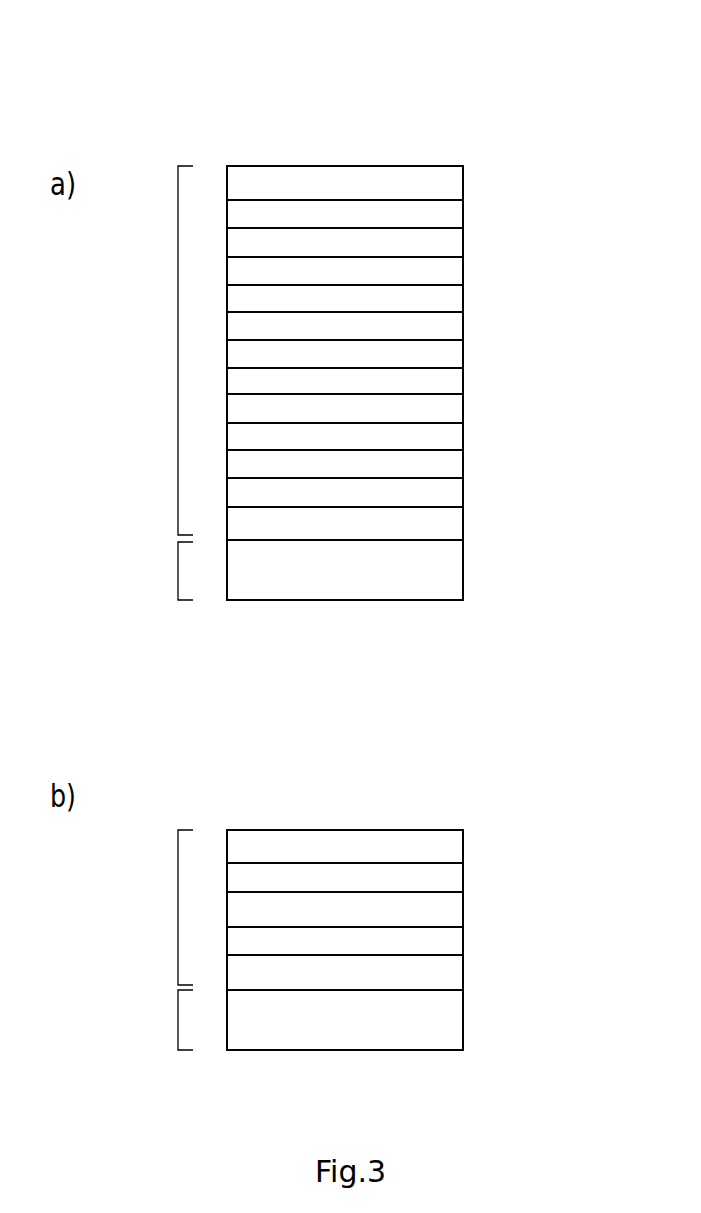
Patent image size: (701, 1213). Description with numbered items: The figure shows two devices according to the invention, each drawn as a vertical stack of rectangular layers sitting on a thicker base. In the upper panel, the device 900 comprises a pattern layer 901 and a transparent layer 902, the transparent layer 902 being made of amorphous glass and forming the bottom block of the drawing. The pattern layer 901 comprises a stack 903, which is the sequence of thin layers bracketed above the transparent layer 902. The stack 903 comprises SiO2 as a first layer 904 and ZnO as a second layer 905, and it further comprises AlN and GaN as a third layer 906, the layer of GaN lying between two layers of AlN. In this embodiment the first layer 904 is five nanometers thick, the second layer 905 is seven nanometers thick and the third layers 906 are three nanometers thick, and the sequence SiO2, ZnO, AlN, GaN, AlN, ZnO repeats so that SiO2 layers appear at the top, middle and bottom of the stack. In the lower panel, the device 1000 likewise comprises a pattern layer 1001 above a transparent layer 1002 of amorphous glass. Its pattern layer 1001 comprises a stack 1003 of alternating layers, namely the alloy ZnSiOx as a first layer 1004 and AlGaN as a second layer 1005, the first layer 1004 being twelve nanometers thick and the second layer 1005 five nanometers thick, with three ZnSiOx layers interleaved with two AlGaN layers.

The device 900 is at (207, 103).
The pattern layer 901 is at (178, 364).
The transparent layer 902 is at (178, 568).
The stack 903 is at (500, 78).
The first layer 904 is at (390, 334).
The second layer 905 is at (390, 342).
The third layer 906 is at (390, 341).
The device 1000 is at (222, 780).
The pattern layer 1001 is at (178, 912).
The transparent layer 1002 is at (178, 1018).
The stack 1003 is at (502, 748).
The first layer 1004 is at (396, 891).
The second layer 1005 is at (396, 898).